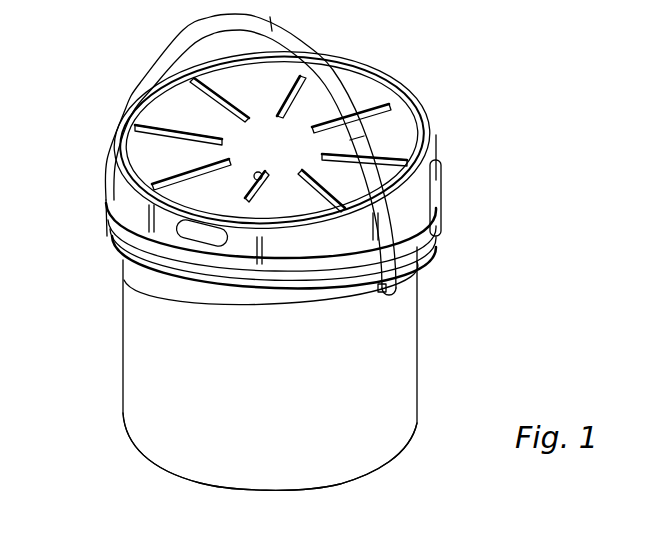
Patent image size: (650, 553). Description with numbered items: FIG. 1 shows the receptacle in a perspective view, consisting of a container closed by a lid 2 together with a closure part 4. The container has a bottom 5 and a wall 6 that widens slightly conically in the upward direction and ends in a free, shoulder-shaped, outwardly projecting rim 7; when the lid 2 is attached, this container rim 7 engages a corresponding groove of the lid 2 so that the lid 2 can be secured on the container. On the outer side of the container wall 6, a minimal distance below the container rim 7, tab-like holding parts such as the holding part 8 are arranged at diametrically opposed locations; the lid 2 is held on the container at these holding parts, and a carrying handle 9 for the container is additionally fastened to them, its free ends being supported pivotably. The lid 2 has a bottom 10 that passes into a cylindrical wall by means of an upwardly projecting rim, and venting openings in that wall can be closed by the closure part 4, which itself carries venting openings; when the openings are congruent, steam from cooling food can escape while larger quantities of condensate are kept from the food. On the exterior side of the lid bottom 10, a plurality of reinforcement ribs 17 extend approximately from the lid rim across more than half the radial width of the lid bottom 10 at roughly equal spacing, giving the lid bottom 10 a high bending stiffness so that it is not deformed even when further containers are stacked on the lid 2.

The lid 2 is at (319, 185).
The closure part 4 is at (442, 138).
The bottom 5 is at (370, 470).
The wall 6 is at (418, 343).
The rim 7 is at (425, 235).
The holding part 8 is at (382, 292).
The carrying handle 9 is at (310, 57).
The bottom 10 is at (357, 93).
The reinforcement ribs 17 is at (168, 177).